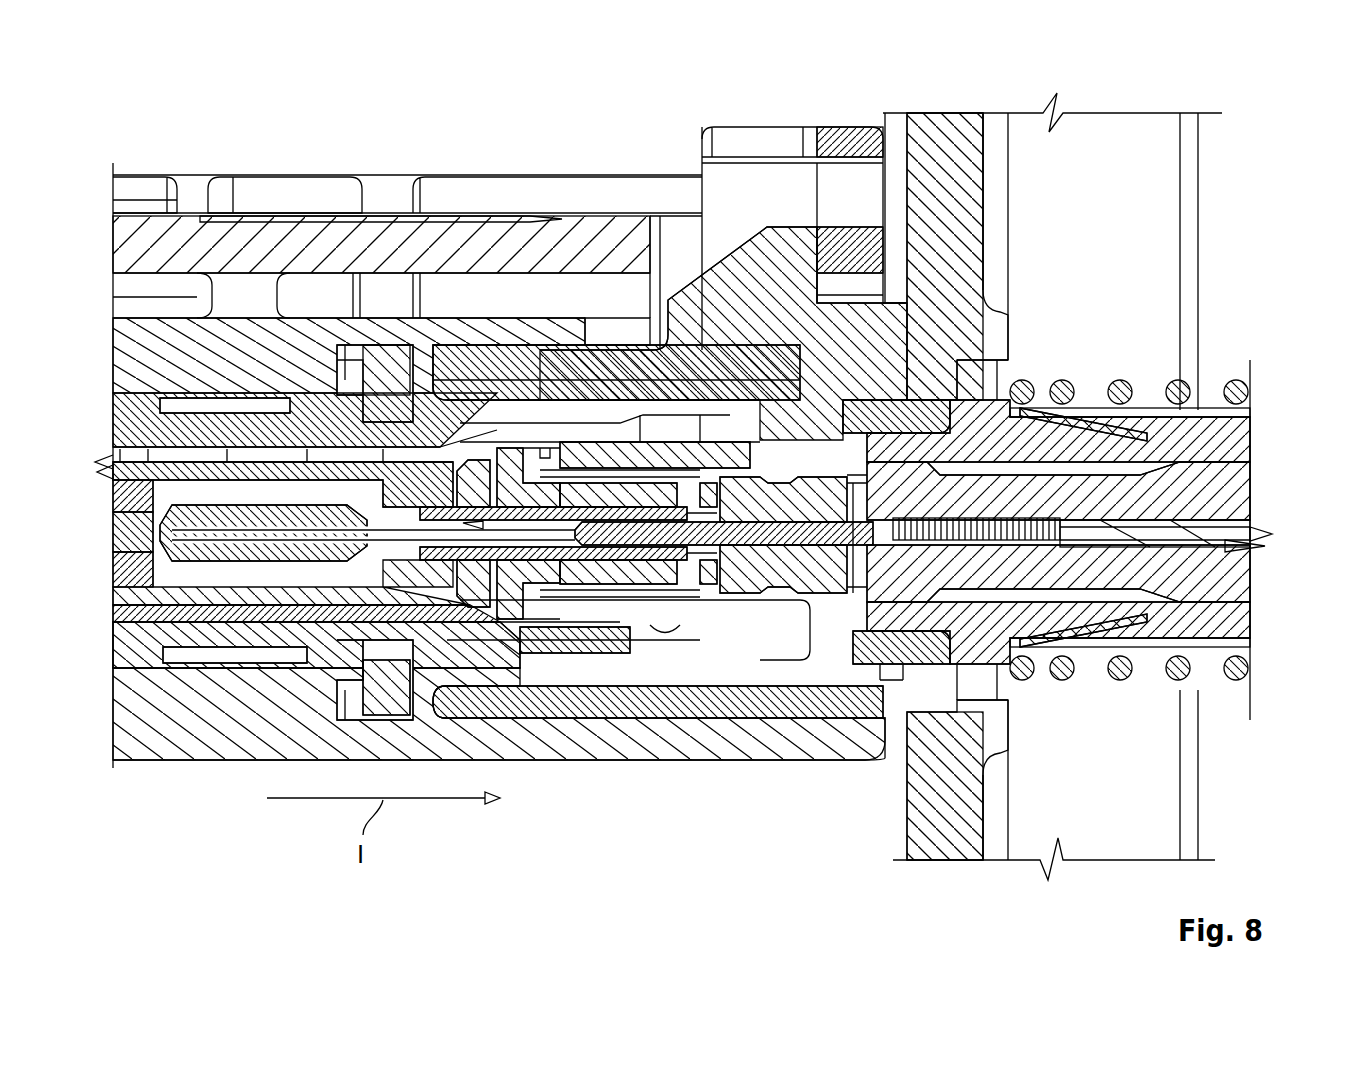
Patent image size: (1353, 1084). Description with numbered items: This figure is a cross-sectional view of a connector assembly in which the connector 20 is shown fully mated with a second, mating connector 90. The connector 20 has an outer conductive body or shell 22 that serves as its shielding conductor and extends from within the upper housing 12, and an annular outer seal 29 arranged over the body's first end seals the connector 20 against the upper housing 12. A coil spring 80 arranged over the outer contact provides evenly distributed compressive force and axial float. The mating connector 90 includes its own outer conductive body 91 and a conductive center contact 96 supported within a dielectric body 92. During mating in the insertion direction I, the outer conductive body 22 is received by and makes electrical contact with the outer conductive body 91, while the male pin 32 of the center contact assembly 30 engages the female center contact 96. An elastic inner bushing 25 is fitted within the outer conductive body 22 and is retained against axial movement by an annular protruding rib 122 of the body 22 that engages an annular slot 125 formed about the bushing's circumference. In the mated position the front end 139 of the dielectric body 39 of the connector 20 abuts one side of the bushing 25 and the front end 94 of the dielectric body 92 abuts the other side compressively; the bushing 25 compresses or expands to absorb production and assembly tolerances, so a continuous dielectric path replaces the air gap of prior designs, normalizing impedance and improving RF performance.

The upper housing 12 is at (972, 128).
The connector 20 is at (672, 462).
The outer conductive body 22 is at (603, 607).
The inner bushing 25 is at (807, 380).
The annular outer seal 29 is at (902, 643).
The center contact assembly 30 is at (1222, 538).
The male pin 32 is at (763, 537).
The dielectric body 39 is at (1222, 470).
The coil spring 80 is at (1225, 378).
The mating connector 90 is at (581, 437).
The outer conductive body 91 is at (658, 702).
The dielectric body 92 is at (657, 627).
The front end 94 is at (700, 625).
The conductive center contact 96 is at (630, 627).
The annular protruding rib 122 is at (787, 600).
The annular slot 125 is at (848, 420).
The front end 139 is at (863, 600).